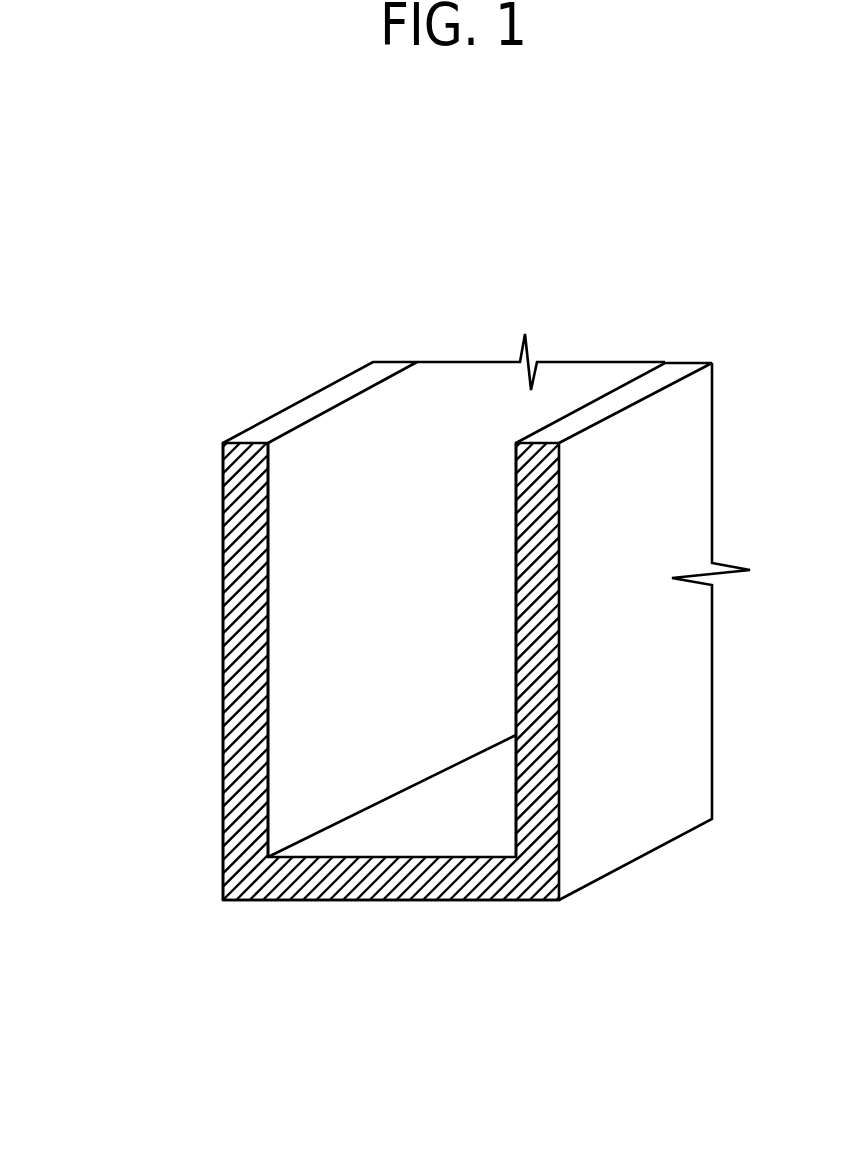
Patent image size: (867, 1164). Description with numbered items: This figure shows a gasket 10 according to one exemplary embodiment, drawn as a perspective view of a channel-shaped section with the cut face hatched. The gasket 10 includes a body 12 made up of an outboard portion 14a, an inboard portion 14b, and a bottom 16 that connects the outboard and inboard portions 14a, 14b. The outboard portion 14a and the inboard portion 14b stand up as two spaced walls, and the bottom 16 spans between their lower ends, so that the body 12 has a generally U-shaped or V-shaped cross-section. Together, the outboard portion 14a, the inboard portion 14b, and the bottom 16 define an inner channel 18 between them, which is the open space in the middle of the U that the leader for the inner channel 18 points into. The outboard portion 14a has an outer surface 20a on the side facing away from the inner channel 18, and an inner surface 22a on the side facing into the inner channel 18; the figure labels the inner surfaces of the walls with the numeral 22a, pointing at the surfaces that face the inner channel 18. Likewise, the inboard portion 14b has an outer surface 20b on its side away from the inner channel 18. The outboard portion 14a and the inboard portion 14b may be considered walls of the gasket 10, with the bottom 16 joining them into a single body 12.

The gasket 10 is at (583, 176).
The body 12 is at (178, 633).
The outboard portion 14a is at (308, 413).
The inboard portion 14b is at (602, 408).
The bottom 16 is at (422, 900).
The inner channel 18 is at (447, 506).
The outer surface 20a is at (206, 498).
The outer surface 20b is at (690, 485).
The inner surface 22a is at (322, 652).